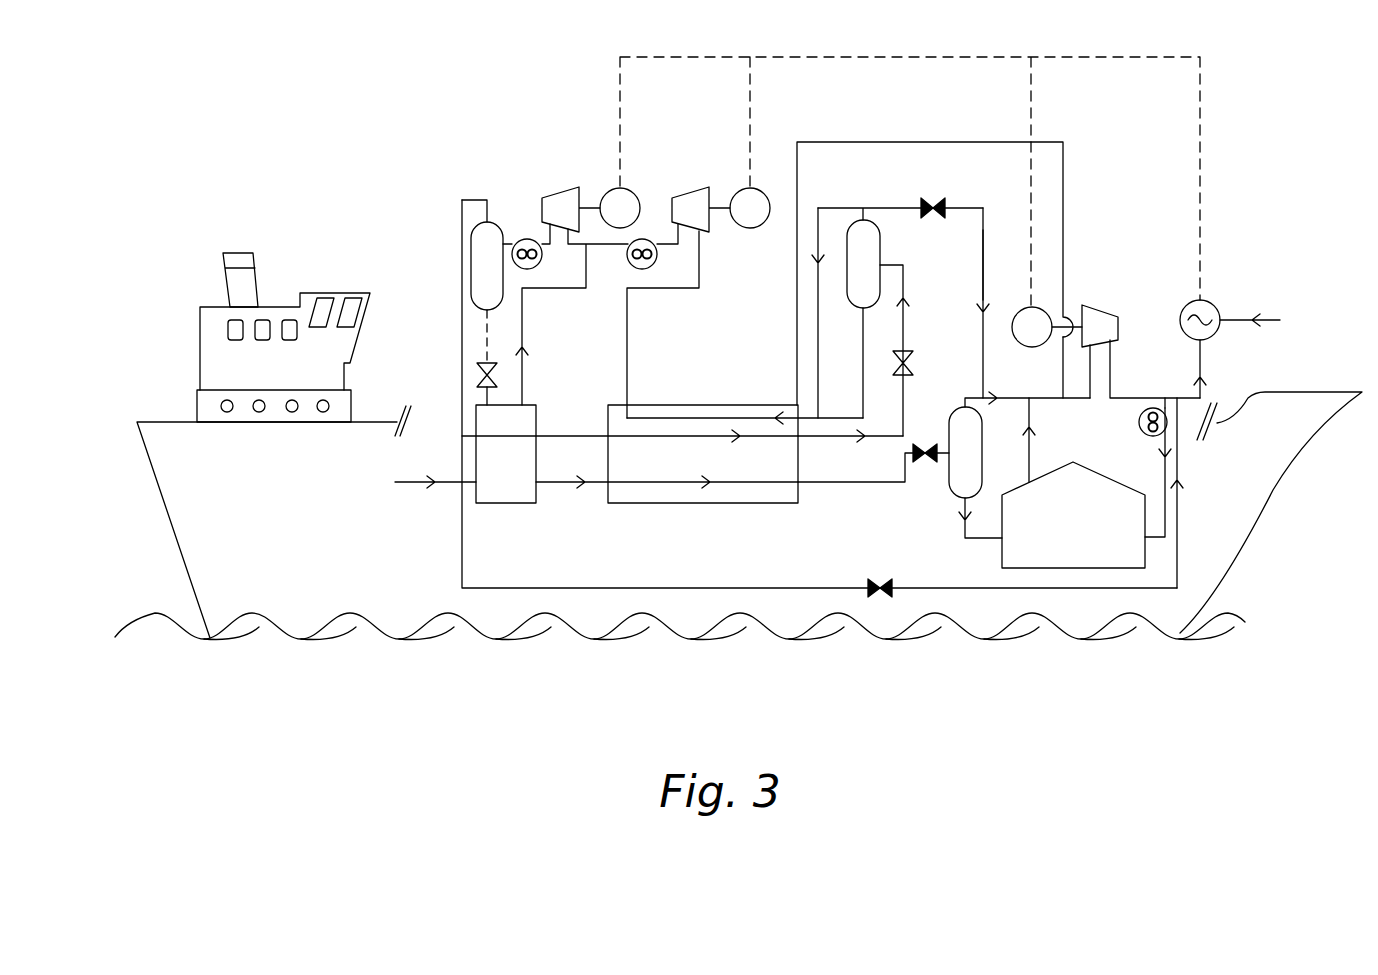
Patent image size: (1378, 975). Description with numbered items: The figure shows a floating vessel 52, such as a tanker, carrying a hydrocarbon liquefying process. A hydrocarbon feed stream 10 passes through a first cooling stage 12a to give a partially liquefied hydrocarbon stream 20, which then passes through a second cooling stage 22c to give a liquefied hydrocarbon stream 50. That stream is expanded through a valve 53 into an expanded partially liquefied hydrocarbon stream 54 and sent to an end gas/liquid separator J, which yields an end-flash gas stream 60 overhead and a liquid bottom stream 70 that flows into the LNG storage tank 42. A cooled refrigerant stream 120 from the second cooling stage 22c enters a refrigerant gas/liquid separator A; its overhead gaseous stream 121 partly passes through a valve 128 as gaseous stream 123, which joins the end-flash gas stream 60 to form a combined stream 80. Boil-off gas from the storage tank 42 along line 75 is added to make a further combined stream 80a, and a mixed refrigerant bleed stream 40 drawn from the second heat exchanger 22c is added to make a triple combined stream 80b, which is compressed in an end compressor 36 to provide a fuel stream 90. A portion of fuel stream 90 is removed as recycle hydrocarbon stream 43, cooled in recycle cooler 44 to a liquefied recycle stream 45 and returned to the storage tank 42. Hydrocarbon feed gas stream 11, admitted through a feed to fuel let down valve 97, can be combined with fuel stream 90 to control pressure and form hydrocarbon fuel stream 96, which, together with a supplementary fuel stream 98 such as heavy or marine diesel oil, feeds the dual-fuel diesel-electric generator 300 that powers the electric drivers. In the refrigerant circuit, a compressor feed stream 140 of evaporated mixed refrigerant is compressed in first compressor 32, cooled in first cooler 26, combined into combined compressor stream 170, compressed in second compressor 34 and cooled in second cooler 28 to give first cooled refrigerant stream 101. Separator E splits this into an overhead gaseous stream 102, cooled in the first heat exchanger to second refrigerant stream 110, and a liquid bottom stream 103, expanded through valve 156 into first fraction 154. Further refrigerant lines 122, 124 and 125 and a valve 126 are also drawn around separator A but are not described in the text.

The hydrocarbon feed stream 10 is at (408, 485).
The hydrocarbon feed gas stream 11 is at (766, 586).
The first cooling stage 12a is at (495, 503).
The partially liquefied hydrocarbon stream 20 is at (565, 483).
The second cooling stage 22c is at (655, 503).
The first cooler 26 is at (646, 240).
The second cooler 28 is at (523, 240).
The first compressor 32 is at (701, 209).
The second compressor 34 is at (571, 209).
The end compressor 36 is at (1100, 326).
The mixed refrigerant bleed stream 40 is at (933, 142).
The storage tank 42 is at (1073, 515).
The recycle hydrocarbon stream 43 is at (1163, 398).
The recycle cooler 44 is at (1148, 434).
The liquefied recycle stream 45 is at (1155, 538).
The liquefied hydrocarbon stream 50 is at (848, 484).
The floating vessel 52 is at (282, 585).
The valve 53 is at (920, 448).
The expanded partially liquefied hydrocarbon stream 54 is at (943, 455).
The end-flash gas stream 60 is at (978, 397).
The liquid bottom stream 70 is at (963, 505).
The boil-off gas stream 75 is at (1027, 458).
The combined stream 80 is at (1005, 397).
The further combined stream 80a is at (1047, 400).
The triple combined stream 80b is at (1082, 400).
The fuel stream 90 is at (1112, 362).
The hydrocarbon fuel stream 96 is at (1203, 360).
The feed to fuel let down valve 97 is at (880, 580).
The supplementary fuel stream 98 is at (1268, 320).
The first cooled refrigerant stream 101 is at (512, 243).
The overhead gaseous stream 102 is at (460, 380).
The liquid bottom stream 103 is at (490, 318).
The second refrigerant stream 110 is at (555, 435).
The cooled refrigerant stream 120 is at (835, 438).
The overhead gaseous stream 121 is at (863, 216).
The line 122 is at (862, 337).
The gaseous stream 123 is at (983, 262).
The line 124 is at (817, 220).
The line 125 is at (813, 417).
The valve 126 is at (908, 350).
The valve 128 is at (935, 200).
The compressor feed stream 140 is at (627, 358).
The first fraction 154 is at (487, 397).
The valve 156 is at (480, 365).
The combined compressor stream 170 is at (568, 243).
The dual-fuel diesel-electric generator 300 is at (1218, 303).